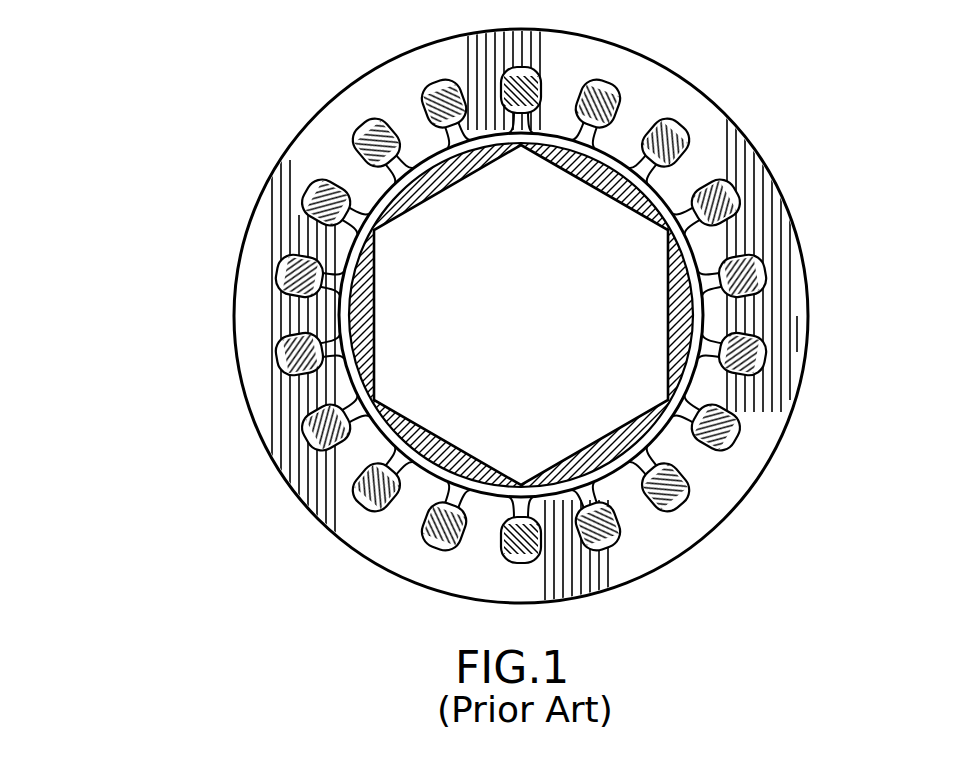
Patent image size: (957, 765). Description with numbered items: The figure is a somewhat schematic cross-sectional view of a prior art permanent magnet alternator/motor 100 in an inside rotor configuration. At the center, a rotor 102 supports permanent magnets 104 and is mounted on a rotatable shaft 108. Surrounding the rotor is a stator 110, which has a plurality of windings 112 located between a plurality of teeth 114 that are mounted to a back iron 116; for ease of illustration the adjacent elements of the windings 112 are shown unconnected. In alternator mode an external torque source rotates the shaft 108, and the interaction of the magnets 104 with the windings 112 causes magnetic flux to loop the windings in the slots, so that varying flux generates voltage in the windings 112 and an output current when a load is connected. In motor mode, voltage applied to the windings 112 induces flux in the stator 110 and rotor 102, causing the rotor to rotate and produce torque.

The brushless motor stator assembly 100 is at (196, 489).
The rotor 102 is at (692, 393).
The permanent magnets 104 is at (660, 193).
The rotatable shaft 108 is at (402, 352).
The stator 110 is at (318, 148).
The windings 112 is at (292, 268).
The teeth 114 is at (716, 317).
The back iron 116 is at (796, 354).